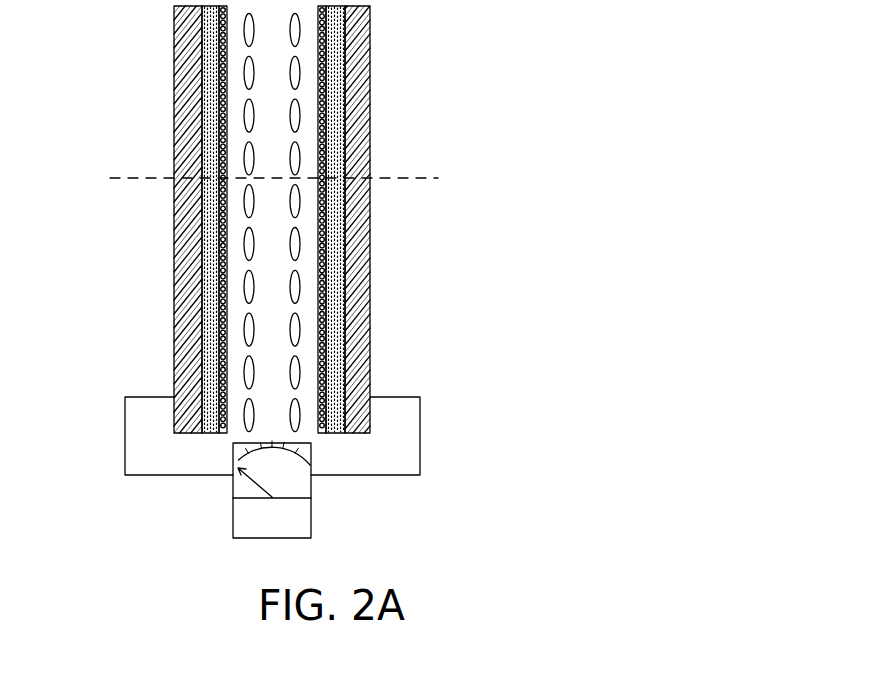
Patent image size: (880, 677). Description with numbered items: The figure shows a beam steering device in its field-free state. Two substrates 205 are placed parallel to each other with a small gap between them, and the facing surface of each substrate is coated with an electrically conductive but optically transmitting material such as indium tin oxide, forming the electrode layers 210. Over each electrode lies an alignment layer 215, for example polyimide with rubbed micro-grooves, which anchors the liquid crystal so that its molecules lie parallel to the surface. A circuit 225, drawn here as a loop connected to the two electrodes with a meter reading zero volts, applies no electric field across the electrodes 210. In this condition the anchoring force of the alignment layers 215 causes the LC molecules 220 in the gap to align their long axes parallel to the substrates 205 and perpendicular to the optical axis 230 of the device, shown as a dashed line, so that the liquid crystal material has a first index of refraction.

The substrates 205 is at (190, 97).
The electrode layers 210 is at (227, 167).
The alignment layers 215 is at (227, 257).
The LC molecules 220 is at (312, 293).
The circuit 225 is at (420, 448).
The optical axis 230 is at (127, 178).